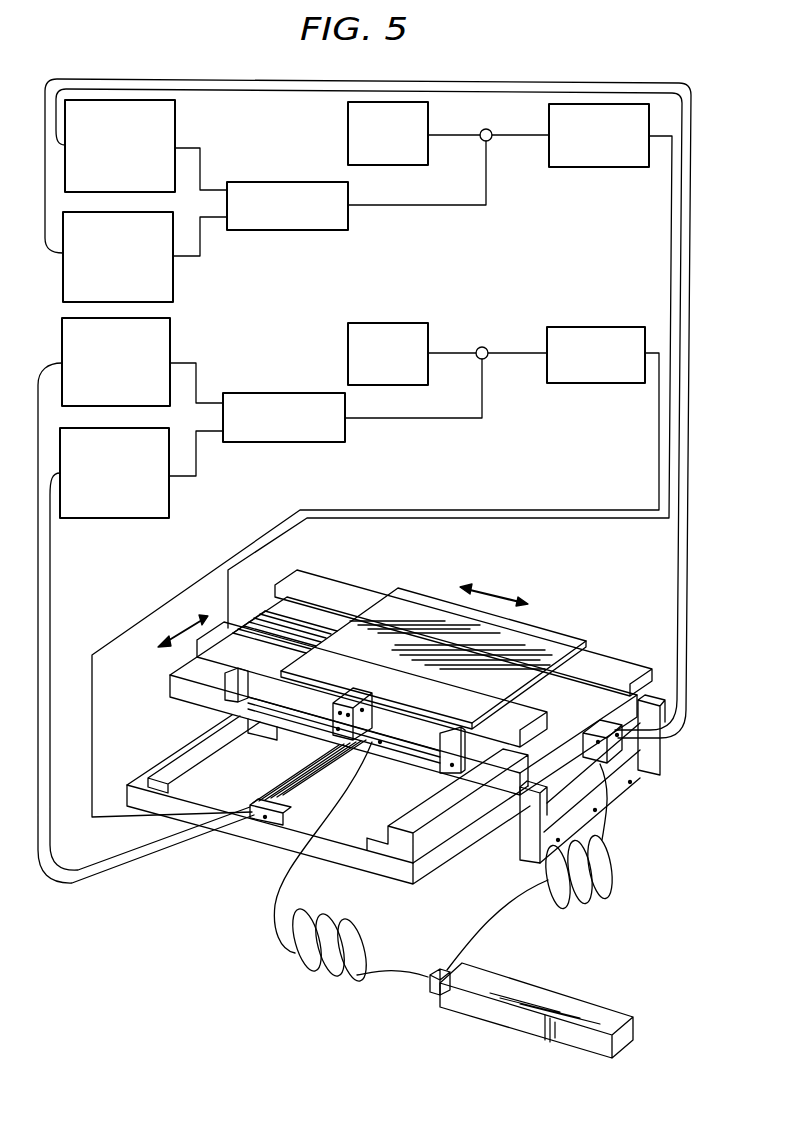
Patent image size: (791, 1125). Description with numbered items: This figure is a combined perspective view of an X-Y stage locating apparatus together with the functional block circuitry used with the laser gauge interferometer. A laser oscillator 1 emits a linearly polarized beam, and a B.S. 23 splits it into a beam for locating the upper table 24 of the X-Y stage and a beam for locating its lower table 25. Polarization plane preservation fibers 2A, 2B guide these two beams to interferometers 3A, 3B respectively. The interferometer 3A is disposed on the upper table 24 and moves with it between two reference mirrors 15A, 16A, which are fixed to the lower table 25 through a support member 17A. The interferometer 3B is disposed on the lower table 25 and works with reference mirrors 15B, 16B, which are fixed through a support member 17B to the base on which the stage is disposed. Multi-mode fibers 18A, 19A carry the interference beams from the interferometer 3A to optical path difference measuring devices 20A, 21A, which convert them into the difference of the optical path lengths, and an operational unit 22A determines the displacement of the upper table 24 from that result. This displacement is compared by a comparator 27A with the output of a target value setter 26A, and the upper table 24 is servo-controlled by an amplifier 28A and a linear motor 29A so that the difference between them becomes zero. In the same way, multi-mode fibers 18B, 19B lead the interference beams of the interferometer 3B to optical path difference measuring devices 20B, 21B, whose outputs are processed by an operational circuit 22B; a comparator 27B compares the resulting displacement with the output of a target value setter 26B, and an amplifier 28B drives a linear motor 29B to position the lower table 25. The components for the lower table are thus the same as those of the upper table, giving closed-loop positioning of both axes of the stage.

The laser oscillator 1 is at (468, 1008).
The polarization plane preservation fiber 2A is at (270, 918).
The polarization plane preservation fiber 2B is at (560, 897).
The interferometer 3A is at (353, 690).
The interferometer 3B is at (614, 752).
The reference mirror 15A is at (225, 697).
The reference mirror 15B is at (530, 828).
The reference mirror 16A is at (445, 733).
The reference mirror 16B is at (664, 712).
The support member 17A is at (412, 758).
The support member 17B is at (532, 860).
The multi-mode fiber 18A is at (50, 556).
The multi-mode fiber 18B is at (678, 560).
The multi-mode fiber 19A is at (38, 581).
The multi-mode fiber 19B is at (686, 583).
The optical path difference measuring device 20A is at (169, 493).
The optical path difference measuring device 20B is at (173, 283).
The optical path difference measuring device 21A is at (170, 330).
The optical path difference measuring device 21B is at (176, 112).
The operational circuit 22A is at (287, 393).
The operational circuit 22B is at (290, 230).
The B.S. (beam splitter) 23 is at (430, 982).
The upper table 24 is at (418, 600).
The lower table 25 is at (343, 598).
The target value setter 26A is at (388, 323).
The target value setter 26B is at (348, 128).
The comparator 27A is at (486, 347).
The comparator 27B is at (489, 129).
The amplifier 28A is at (597, 327).
The amplifier 28B is at (600, 167).
The linear motor 29A is at (245, 620).
The linear motor 29B is at (273, 825).